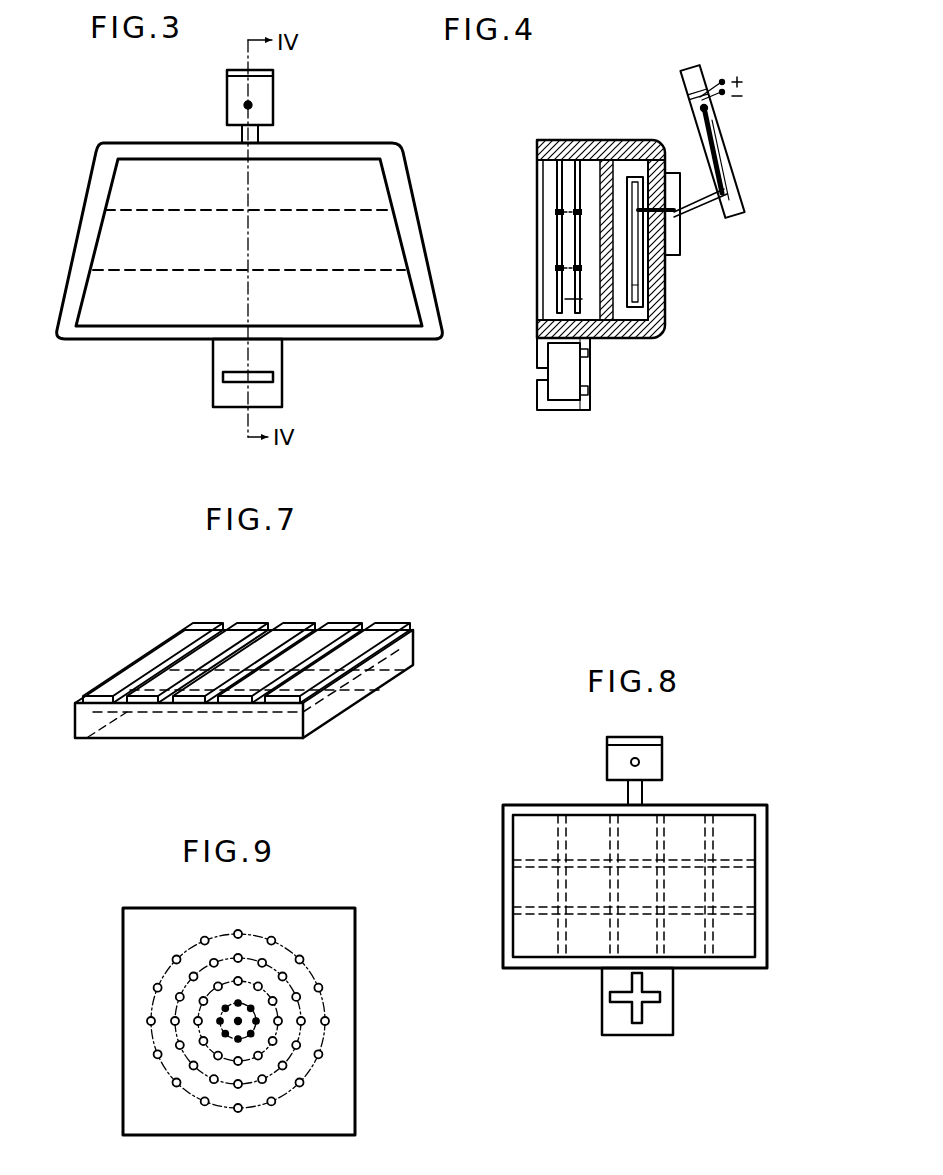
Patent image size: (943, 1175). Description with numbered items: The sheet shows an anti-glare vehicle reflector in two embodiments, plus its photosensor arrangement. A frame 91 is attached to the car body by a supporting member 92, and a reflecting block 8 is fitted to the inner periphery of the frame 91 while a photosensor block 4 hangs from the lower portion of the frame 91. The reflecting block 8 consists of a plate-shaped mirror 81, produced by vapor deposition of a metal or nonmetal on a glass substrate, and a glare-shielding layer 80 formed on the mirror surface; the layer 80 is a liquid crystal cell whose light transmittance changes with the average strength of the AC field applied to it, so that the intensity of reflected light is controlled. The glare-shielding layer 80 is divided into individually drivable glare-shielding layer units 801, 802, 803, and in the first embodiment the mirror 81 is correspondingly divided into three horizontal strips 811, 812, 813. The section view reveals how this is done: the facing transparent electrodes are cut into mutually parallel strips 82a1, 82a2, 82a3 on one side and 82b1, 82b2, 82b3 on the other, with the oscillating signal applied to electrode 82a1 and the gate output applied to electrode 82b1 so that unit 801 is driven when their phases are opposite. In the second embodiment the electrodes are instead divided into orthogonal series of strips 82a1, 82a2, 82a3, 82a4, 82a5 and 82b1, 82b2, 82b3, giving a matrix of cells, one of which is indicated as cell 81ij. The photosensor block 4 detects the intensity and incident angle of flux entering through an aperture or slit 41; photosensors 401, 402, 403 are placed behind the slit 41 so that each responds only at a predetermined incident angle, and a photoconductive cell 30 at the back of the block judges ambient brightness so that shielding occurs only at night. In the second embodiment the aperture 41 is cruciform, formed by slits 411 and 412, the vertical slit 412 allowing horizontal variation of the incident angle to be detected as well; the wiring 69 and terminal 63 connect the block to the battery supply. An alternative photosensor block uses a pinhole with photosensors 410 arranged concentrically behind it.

In FIG. 3, the photosensor block 4 is at (205, 404).
In FIG. 8, the photosensor block 4 is at (617, 1036).
In FIG. 3, the slit 41 is at (273, 377).
In FIG. 4, the slit 41 is at (545, 375).
In FIG. 8, the slit 41 is at (640, 1015).
In FIG. 4, the photosensor 401 is at (586, 402).
In FIG. 4, the photosensor 402 is at (588, 373).
In FIG. 4, the photosensor 403 is at (588, 355).
In FIG. 4, the photoconductive cell 30 is at (591, 392).
In FIG. 4, the lead terminal 63 is at (636, 290).
In FIG. 4, the lead wires 69 is at (718, 84).
In FIG. 3, the reflecting block 8 is at (277, 247).
In FIG. 4, the reflecting block 8 is at (590, 220).
In FIG. 7, the glare-shielding layer 80 is at (77, 725).
In FIG. 4, the glare-shielding layer unit 801 is at (538, 170).
In FIG. 4, the glare-shielding layer unit 802 is at (541, 232).
In FIG. 4, the glare-shielding layer unit 803 is at (565, 299).
In FIG. 3, the mirror 81 is at (341, 182).
In FIG. 4, the mirror 81 is at (596, 158).
In FIG. 3, the horizontal strip 811 is at (375, 192).
In FIG. 3, the horizontal strip 812 is at (388, 250).
In FIG. 3, the horizontal strip 813 is at (402, 302).
In FIG. 8, the solar cell element 81ij is at (635, 886).
In FIG. 4, the transparent electrode strip 82a1 is at (584, 160).
In FIG. 7, the transparent electrode strip 82a1 is at (212, 622).
In FIG. 4, the transparent electrode strip 82a2 is at (628, 195).
In FIG. 7, the transparent electrode strip 82a2 is at (250, 622).
In FIG. 4, the transparent electrode strip 82a3 is at (606, 325).
In FIG. 7, the transparent electrode strip 82a3 is at (293, 622).
In FIG. 7, the transparent electrode strip 82a4 is at (358, 606).
In FIG. 7, the transparent electrode strip 82a5 is at (397, 618).
In FIG. 4, the transparent electrode strip 82b1 is at (562, 162).
In FIG. 7, the transparent electrode strip 82b1 is at (327, 727).
In FIG. 4, the transparent electrode strip 82b2 is at (548, 250).
In FIG. 7, the transparent electrode strip 82b2 is at (375, 700).
In FIG. 4, the transparent electrode strip 82b3 is at (558, 322).
In FIG. 7, the transparent electrode strip 82b3 is at (410, 687).
In FIG. 3, the frame 91 is at (94, 176).
In FIG. 4, the frame 91 is at (668, 326).
In FIG. 4, the supporting member 92 is at (730, 158).
In FIG. 9, the holes 410 is at (240, 1021).
In FIG. 8, the slit 411 is at (661, 1003).
In FIG. 8, the vertical slit 412 is at (632, 984).